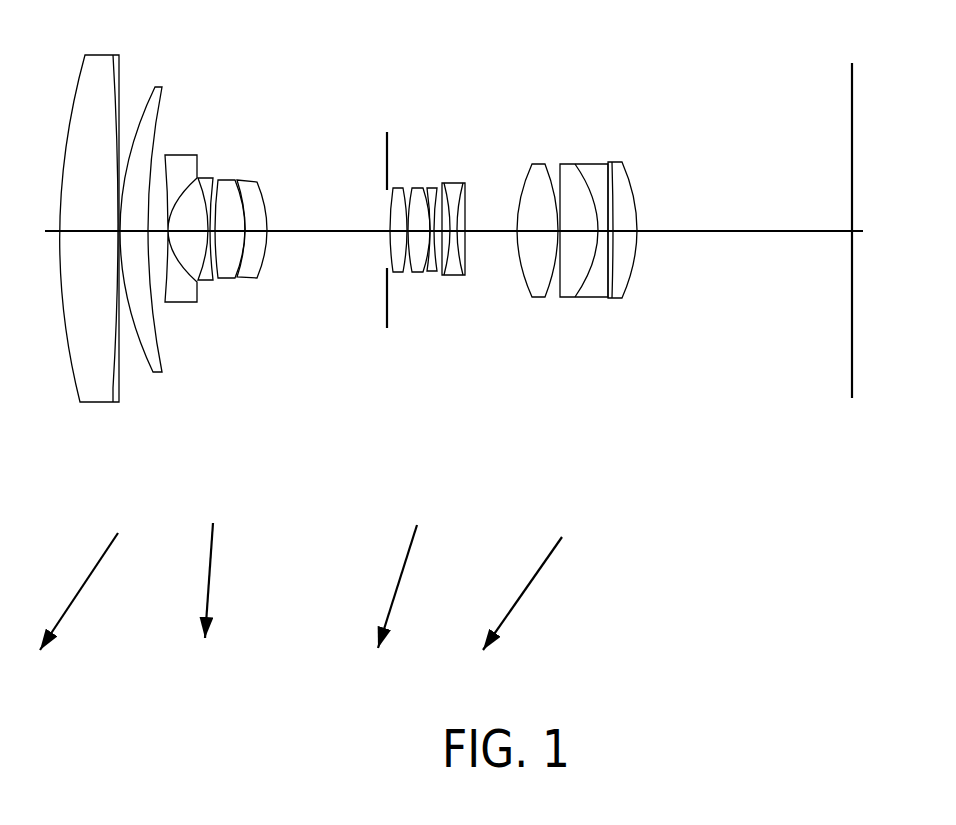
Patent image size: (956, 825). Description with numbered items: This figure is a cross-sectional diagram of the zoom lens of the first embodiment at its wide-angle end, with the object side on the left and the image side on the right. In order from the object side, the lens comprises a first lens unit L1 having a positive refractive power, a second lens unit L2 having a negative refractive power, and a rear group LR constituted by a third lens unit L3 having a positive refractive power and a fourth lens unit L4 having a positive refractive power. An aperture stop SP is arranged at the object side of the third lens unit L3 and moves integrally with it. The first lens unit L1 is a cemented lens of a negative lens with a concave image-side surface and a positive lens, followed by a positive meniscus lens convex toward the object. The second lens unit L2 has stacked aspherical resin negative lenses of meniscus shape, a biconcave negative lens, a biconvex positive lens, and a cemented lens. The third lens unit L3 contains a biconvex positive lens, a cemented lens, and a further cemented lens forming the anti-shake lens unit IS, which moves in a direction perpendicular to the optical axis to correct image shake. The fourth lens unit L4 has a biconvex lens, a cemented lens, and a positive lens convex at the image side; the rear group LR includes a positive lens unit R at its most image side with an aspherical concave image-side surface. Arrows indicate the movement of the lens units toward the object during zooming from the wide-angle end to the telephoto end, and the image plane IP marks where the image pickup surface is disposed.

The first lens unit L1 is at (165, 437).
The second lens unit L2 is at (265, 320).
The third lens unit L3 is at (429, 247).
The fourth lens unit L4 is at (580, 247).
The rear group LR is at (513, 212).
The anti-shake lens unit IS is at (477, 157).
The lens unit R is at (580, 194).
The aperture stop SP is at (387, 168).
The image plane IP is at (852, 158).